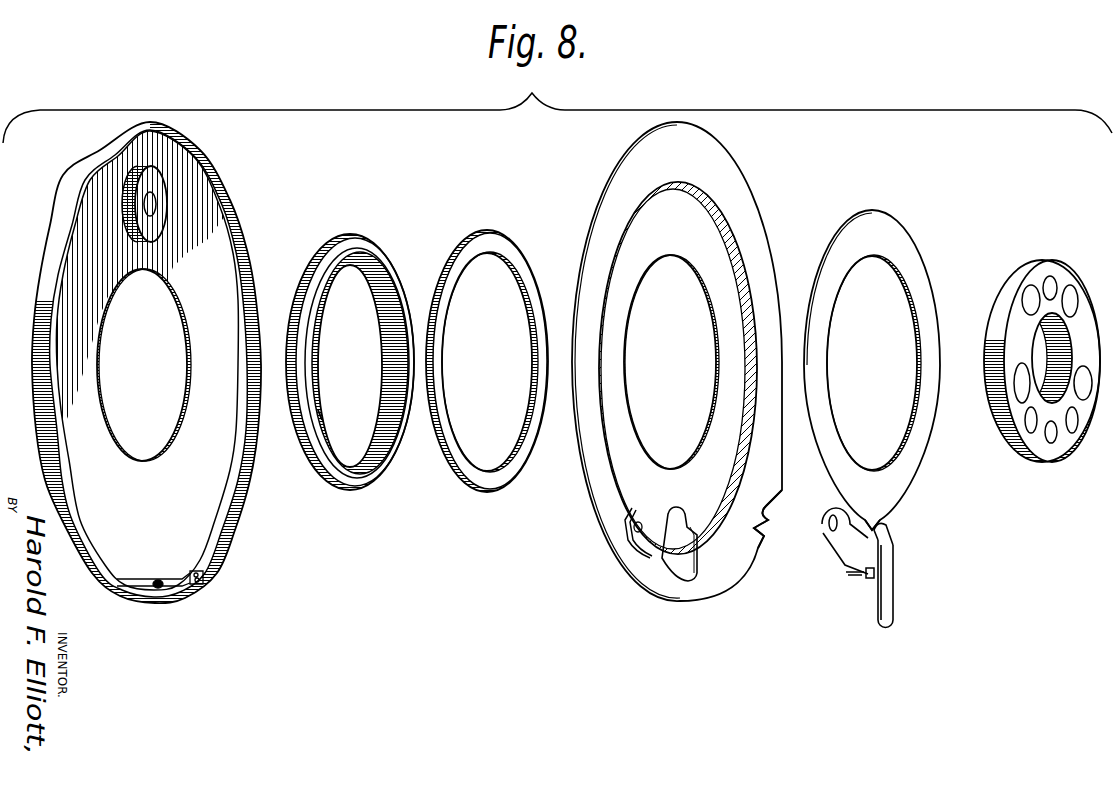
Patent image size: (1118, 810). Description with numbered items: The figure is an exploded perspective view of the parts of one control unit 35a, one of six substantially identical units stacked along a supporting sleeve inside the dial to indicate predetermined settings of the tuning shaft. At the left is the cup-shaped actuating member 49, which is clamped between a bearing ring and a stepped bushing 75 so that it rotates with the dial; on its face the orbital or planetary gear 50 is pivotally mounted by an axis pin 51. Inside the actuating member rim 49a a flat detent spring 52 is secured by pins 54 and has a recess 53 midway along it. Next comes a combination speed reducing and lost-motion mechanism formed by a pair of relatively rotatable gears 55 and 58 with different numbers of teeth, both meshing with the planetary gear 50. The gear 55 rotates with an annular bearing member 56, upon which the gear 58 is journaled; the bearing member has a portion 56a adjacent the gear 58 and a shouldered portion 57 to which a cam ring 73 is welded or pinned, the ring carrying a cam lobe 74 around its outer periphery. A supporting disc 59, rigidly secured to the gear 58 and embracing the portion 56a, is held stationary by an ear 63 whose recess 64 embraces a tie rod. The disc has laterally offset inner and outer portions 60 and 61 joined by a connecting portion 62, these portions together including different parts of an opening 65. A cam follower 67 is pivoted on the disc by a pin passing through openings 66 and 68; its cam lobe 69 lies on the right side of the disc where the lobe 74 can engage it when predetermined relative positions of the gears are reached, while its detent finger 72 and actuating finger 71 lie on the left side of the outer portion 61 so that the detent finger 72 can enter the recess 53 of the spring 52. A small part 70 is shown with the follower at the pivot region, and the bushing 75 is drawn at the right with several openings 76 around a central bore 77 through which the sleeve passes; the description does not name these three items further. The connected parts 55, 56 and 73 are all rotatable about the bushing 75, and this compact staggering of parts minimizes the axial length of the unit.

The control unit 35a is at (418, 165).
The cup-shaped actuating member 49 is at (82, 264).
The actuating member rim 49a is at (236, 230).
The orbital or planetary gear 50 is at (163, 189).
The axis pin 51 is at (156, 208).
The detent spring 52 is at (127, 578).
The recess 53 is at (159, 582).
The pins 54 is at (204, 571).
The gear 55 is at (358, 238).
The annular bearing member 56 is at (398, 288).
The portion of bearing member 56a is at (325, 415).
The shouldered portion 57 is at (365, 257).
The gear 58 is at (481, 479).
The supporting disc 59 is at (733, 179).
The inner portion of disc 60 is at (720, 318).
The outer portion of disc 61 is at (757, 257).
The connecting portion 62 is at (725, 235).
The ear 63 is at (756, 531).
The recess 64 is at (770, 505).
The opening 65 is at (668, 570).
The opening 66 is at (633, 541).
The cam follower 67 is at (846, 547).
The opening 68 is at (826, 522).
The cam lobe 69 is at (881, 539).
The washer 70 is at (858, 575).
The actuating finger 71 is at (892, 604).
The detent finger 72 is at (870, 580).
The cam ring 73 is at (920, 440).
The cam lobe 74 is at (880, 526).
The stepped bushing 75 is at (1008, 450).
The holes 76 is at (1074, 298).
The central hole 77 is at (1064, 442).